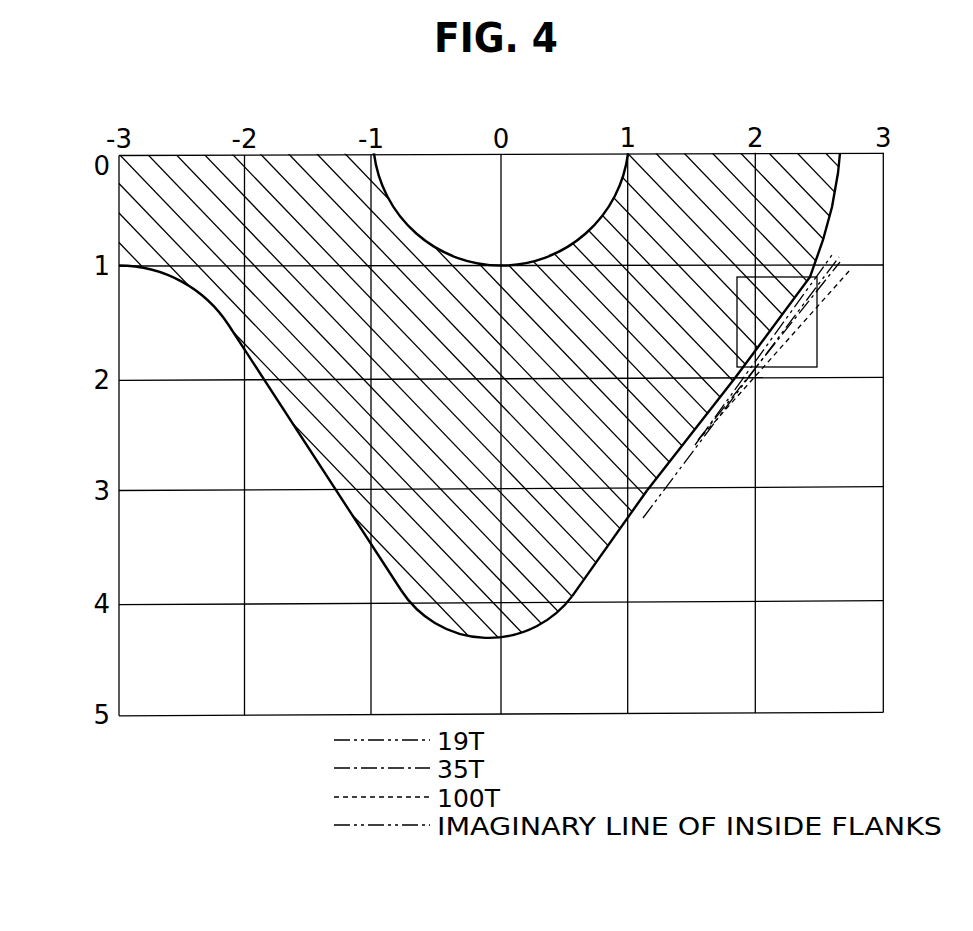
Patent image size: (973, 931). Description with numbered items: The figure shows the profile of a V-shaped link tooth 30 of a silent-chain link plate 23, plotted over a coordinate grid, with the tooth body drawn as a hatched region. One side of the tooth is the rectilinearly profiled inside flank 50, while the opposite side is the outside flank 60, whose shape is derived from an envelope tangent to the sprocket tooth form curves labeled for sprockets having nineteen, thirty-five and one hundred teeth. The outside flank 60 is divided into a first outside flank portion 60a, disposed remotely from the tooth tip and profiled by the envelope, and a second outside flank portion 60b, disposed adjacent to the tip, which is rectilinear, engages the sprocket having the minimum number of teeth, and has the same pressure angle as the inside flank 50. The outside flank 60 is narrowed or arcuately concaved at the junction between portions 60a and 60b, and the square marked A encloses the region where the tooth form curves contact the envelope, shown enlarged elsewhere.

The link plate 23 is at (331, 230).
The inside flank 50 is at (313, 457).
The link tooth 30 is at (543, 575).
The outside flank 60 is at (681, 444).
The first outside flank portion 60a is at (738, 380).
The second outside flank portion 60b is at (632, 510).
The detail region A is at (818, 324).